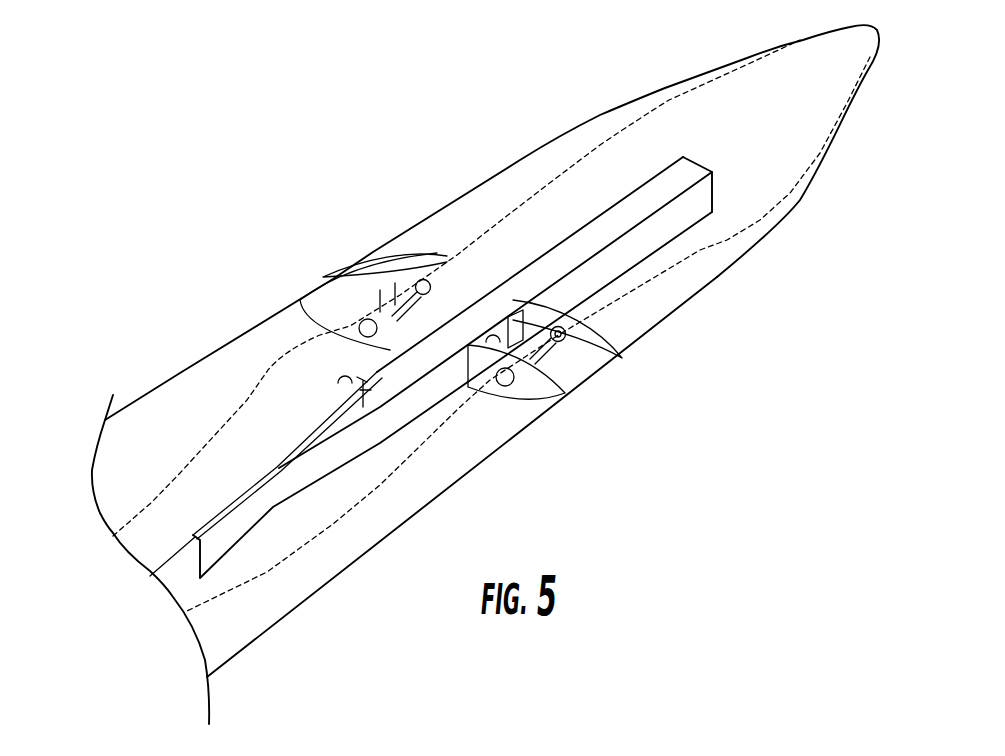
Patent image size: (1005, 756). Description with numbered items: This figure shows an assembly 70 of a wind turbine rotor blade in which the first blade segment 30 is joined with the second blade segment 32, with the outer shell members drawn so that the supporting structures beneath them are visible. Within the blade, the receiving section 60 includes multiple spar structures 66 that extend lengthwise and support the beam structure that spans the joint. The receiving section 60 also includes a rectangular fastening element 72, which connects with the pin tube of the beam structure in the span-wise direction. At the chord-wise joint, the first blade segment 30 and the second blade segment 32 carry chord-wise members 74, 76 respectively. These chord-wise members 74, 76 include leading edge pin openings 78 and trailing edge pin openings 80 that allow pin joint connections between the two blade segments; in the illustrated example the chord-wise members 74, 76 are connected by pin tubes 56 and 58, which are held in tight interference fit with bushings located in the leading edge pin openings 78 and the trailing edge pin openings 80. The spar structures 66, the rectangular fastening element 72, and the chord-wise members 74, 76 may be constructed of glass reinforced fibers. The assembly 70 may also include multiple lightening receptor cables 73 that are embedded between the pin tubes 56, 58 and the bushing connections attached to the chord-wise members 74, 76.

The first blade segment 30 is at (668, 88).
The second blade segment 32 is at (633, 215).
The pin tube 56 is at (556, 303).
The pin tube 58 is at (430, 282).
The receiving section 60 is at (455, 468).
The spar structures 66 is at (305, 426).
The assembly 70 is at (203, 201).
The rectangular fastening element 72 is at (357, 378).
The lightening receptor cables 73 is at (788, 177).
The chord-wise member 74 is at (602, 335).
The chord-wise member 76 is at (527, 405).
The leading edge pin openings 78 is at (572, 352).
The trailing edge pin openings 80 is at (362, 322).